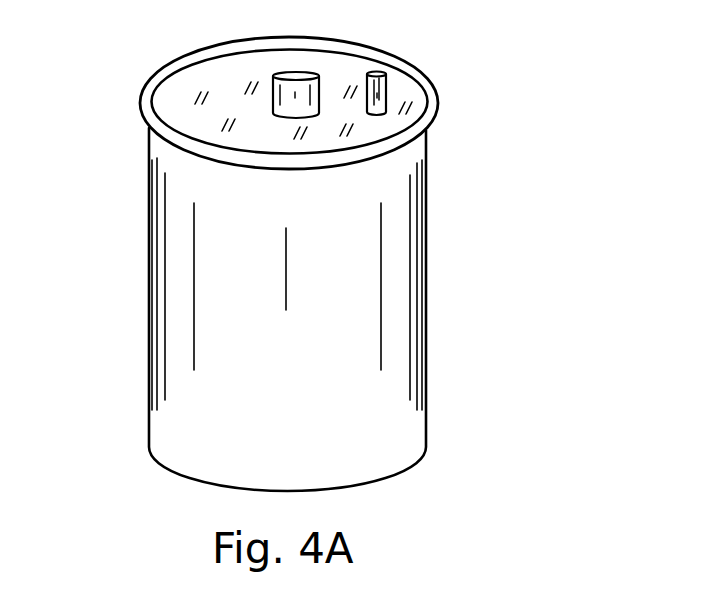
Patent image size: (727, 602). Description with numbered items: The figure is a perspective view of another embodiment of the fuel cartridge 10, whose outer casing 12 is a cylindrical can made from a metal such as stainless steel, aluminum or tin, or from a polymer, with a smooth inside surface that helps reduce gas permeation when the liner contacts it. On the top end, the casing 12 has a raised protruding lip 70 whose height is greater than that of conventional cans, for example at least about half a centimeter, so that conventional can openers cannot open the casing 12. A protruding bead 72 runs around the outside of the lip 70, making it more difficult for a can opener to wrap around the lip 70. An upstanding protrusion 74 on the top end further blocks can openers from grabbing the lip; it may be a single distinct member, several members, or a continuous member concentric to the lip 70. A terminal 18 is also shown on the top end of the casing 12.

The capacitor assembly 10 is at (556, 248).
The outer casing 12 is at (407, 435).
The terminal 18 is at (304, 88).
The raised protruding lip 70 is at (190, 62).
The protruding bead 72 is at (148, 113).
The upstanding protrusion 74 is at (379, 72).